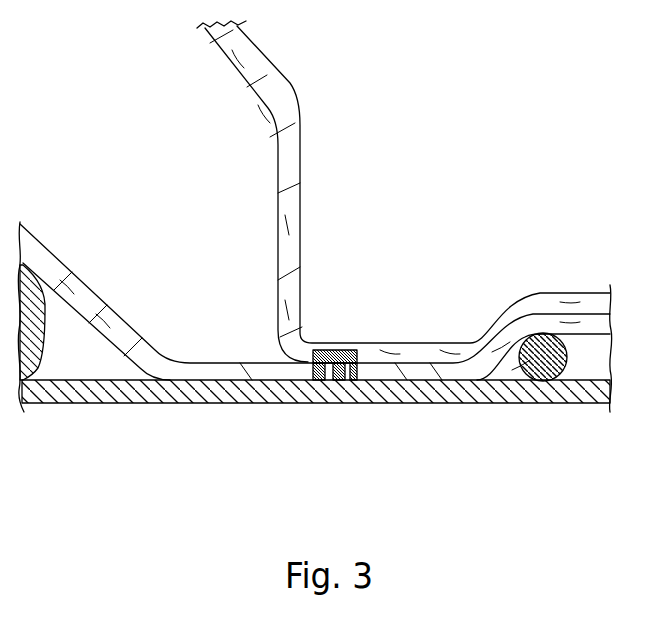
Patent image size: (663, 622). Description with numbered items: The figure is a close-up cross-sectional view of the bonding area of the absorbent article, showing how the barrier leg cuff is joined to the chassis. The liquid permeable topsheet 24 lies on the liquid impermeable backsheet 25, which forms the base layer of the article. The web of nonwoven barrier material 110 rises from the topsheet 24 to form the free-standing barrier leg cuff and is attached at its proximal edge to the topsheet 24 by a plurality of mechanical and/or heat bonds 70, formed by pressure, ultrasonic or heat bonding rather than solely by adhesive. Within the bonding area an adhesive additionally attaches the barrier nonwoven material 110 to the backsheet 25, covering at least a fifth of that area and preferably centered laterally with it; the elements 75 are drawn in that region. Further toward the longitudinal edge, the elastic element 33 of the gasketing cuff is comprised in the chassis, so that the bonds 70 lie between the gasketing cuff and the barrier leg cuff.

The liquid permeable topsheet 24 is at (105, 302).
The liquid impermeable backsheet 25 is at (143, 403).
The elastic element 33 is at (550, 380).
The mechanical and/or heat bonds 70 is at (343, 350).
The joint tabs / rivets 75 is at (355, 384).
The nonwoven barrier material 110 is at (300, 191).